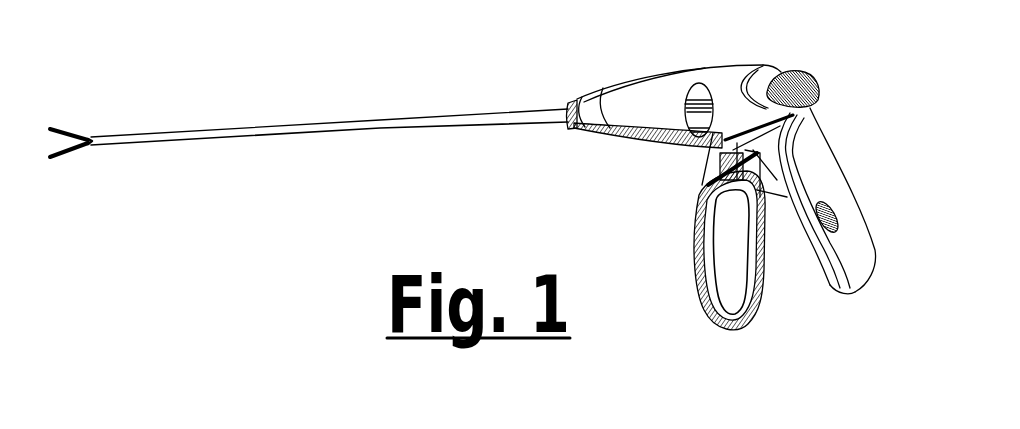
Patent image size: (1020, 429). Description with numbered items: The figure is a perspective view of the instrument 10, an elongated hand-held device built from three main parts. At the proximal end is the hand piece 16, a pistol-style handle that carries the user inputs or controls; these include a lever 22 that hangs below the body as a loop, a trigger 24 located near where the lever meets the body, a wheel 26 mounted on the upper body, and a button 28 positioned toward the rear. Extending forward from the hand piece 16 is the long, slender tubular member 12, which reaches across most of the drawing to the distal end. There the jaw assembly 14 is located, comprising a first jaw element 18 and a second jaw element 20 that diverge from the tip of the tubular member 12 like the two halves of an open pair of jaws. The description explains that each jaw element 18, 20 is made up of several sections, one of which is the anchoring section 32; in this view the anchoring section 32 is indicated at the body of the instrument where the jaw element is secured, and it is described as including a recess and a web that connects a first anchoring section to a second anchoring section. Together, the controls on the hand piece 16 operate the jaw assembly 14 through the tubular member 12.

The instrument 10 is at (545, 72).
The tubular member 12 is at (277, 139).
The jaw assembly 14 is at (93, 119).
The hand piece 16 is at (818, 144).
The first jaw element 18 is at (55, 124).
The second jaw element 20 is at (54, 160).
The lever 22 is at (696, 248).
The trigger 24 is at (714, 173).
The wheel 26 is at (700, 96).
The button 28 is at (798, 84).
The anchoring section 32 is at (637, 93).